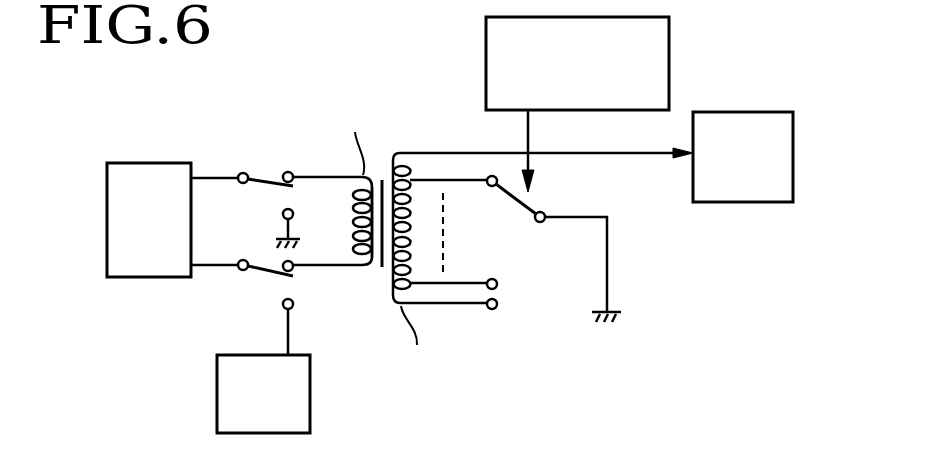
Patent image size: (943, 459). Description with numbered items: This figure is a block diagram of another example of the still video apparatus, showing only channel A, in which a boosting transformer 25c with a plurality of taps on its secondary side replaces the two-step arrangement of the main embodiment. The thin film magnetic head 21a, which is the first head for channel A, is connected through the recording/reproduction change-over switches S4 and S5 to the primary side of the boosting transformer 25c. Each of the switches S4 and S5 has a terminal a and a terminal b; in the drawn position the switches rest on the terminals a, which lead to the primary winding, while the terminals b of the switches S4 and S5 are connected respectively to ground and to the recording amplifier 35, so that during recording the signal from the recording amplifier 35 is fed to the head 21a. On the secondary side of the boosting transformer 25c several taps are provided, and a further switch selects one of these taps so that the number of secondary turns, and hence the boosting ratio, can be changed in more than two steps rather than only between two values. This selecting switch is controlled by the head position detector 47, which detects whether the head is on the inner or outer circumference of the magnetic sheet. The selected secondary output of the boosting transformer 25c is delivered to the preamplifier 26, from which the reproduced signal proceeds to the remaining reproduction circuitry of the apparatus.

The magnetic head 21a is at (158, 163).
The recording/reproduction change-over switch S4 is at (267, 176).
The recording/reproduction change-over switch S5 is at (266, 277).
The terminal a is at (300, 210).
The terminal b is at (299, 259).
The boosting transformer 25c is at (380, 270).
The recording amplifier 35 is at (217, 398).
The head position detector 47 is at (486, 66).
The preamplifier 26 is at (775, 203).